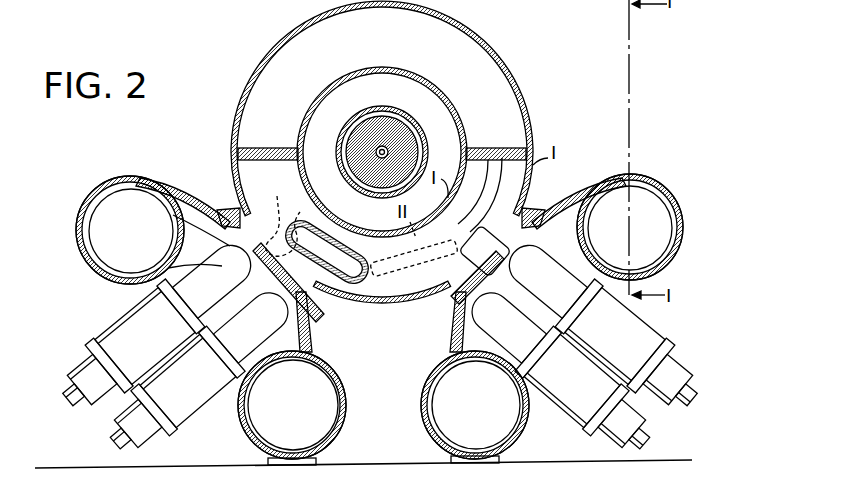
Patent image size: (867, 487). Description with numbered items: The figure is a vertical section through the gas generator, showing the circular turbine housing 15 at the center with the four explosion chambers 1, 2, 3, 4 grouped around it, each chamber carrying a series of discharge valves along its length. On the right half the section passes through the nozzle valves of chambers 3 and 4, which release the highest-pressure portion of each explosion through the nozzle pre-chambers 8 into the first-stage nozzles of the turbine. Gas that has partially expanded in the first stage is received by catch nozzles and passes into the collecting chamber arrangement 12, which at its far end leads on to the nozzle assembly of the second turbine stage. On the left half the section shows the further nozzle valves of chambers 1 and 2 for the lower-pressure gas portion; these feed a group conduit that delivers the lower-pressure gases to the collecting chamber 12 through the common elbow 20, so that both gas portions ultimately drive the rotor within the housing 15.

The explosion chamber 1 is at (105, 207).
The explosion chamber 2 is at (328, 416).
The explosion chamber 3 is at (438, 422).
The explosion chamber 4 is at (650, 188).
The nozzle pre-chamber 8 is at (503, 193).
The collecting chamber arrangement 12 is at (361, 258).
The turbine housing 15 is at (497, 78).
The common elbow 20 is at (280, 215).